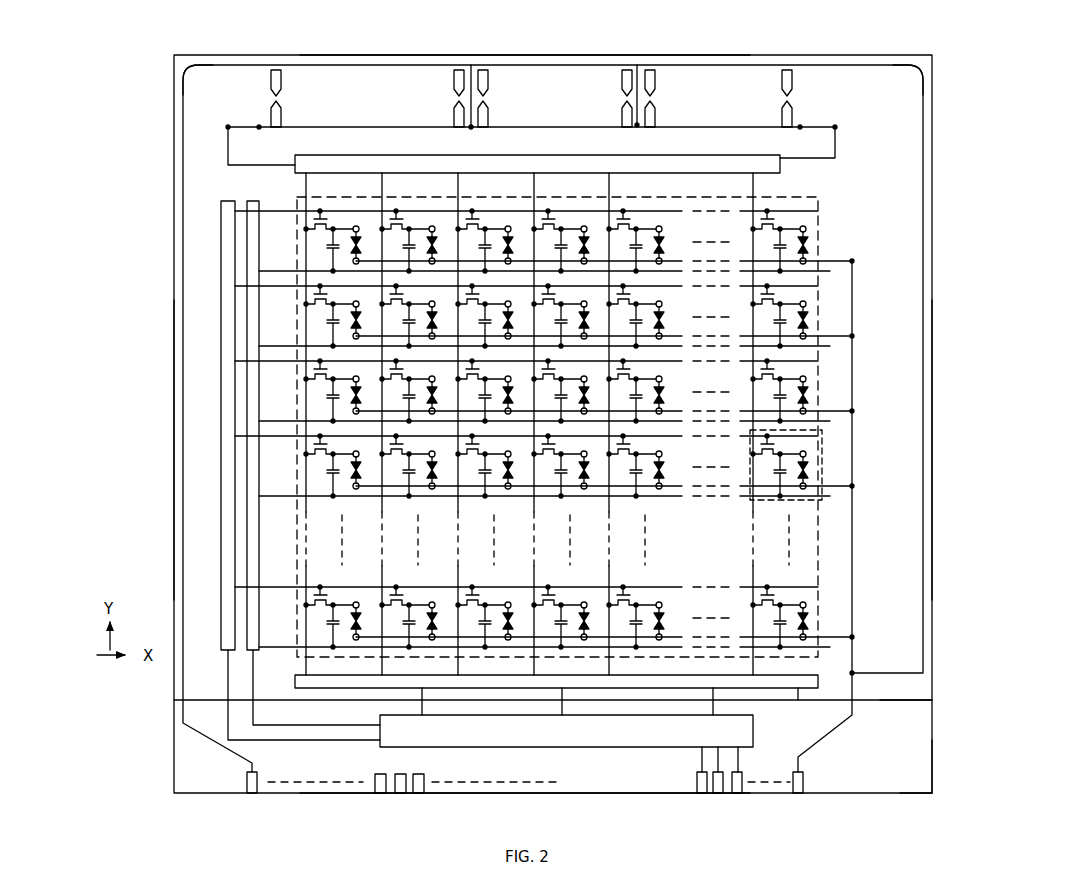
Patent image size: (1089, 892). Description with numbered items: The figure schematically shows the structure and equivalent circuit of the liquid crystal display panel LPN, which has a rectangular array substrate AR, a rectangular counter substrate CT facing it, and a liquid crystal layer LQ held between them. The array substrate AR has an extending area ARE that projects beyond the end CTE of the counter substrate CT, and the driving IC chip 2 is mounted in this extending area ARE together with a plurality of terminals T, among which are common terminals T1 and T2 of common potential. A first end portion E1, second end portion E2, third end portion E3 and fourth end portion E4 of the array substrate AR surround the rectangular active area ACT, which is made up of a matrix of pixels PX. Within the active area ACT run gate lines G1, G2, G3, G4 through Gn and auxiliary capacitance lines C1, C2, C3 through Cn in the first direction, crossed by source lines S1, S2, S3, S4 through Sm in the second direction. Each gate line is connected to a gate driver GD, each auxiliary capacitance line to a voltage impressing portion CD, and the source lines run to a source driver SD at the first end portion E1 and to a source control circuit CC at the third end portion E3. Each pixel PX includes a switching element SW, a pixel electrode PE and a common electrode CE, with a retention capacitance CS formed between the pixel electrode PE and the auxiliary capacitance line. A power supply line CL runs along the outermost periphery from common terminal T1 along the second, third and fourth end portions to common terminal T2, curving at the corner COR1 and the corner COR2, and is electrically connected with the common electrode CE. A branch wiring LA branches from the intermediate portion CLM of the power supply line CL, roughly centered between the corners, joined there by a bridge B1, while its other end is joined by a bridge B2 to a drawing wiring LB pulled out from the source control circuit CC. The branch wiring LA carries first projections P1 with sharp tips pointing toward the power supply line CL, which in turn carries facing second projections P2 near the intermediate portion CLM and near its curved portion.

The liquid crystal display panel LPN is at (957, 65).
The corner COR1 is at (183, 60).
The corner COR2 is at (932, 58).
The first end portion E1 is at (497, 793).
The second end portion E2 is at (176, 462).
The third end portion E3 is at (577, 55).
The fourth end portion E4 is at (932, 362).
The power supply line CL is at (924, 620).
The counter substrate CT is at (920, 690).
The end of the counter substrate CTE is at (900, 703).
The array substrate AR is at (922, 757).
The extending area ARE is at (932, 776).
The branch wiring LA is at (395, 127).
The drawing wiring LB is at (234, 167).
The source control circuit CC is at (545, 155).
The bridge B2 is at (245, 126).
The bridge B1 is at (471, 128).
The intermediate portion CLM is at (471, 65).
The first projection P1 is at (622, 108).
The second projection P2 is at (622, 80).
The gate driver GD is at (228, 530).
The voltage impressing portion CD is at (253, 570).
The source driver SD is at (797, 690).
The driving IC chip 2 is at (620, 747).
The common terminal T1 is at (247, 781).
The terminals T is at (418, 773).
The common terminal T2 is at (800, 793).
The active area ACT is at (820, 304).
The source line S1 is at (308, 188).
The source line S2 is at (384, 188).
The source line S3 is at (460, 188).
The source line S4 is at (536, 188).
The source line Sm is at (755, 188).
The gate line G1 is at (290, 211).
The gate line G2 is at (290, 286).
The gate line G3 is at (290, 361).
The gate line G4 is at (290, 436).
The gate line Gn is at (290, 587).
The auxiliary capacitance line C1 is at (825, 261).
The auxiliary capacitance line C2 is at (825, 336).
The auxiliary capacitance line C3 is at (825, 411).
The auxiliary capacitance line Cn is at (825, 637).
The pixel PX is at (823, 502).
The switching element SW is at (756, 447).
The retention capacitance CS is at (776, 473).
The pixel electrode PE is at (808, 450).
The liquid crystal layer LQ is at (810, 470).
The common electrode CE is at (808, 486).